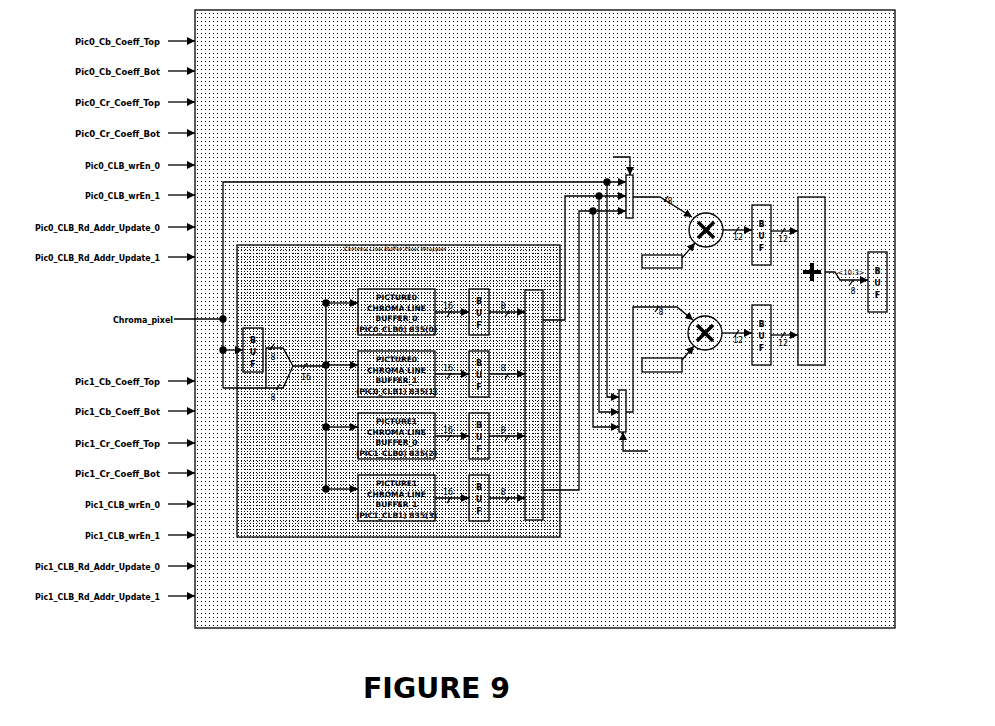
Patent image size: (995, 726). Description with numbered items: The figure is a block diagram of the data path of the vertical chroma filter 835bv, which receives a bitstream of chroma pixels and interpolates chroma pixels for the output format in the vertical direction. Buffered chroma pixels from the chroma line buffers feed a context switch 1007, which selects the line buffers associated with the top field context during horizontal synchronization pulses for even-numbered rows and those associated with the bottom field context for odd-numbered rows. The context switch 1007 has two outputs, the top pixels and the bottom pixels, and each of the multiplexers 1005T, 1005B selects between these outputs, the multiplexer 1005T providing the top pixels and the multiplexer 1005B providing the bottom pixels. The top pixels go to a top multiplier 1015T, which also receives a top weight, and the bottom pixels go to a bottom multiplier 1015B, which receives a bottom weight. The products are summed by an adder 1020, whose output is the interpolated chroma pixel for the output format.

The vertical chroma filter 835bv is at (545, 319).
The context switch 1007 is at (534, 405).
The top multiplexer 1005T is at (635, 206).
The bottom multiplexer 1005B is at (629, 419).
The top multiplier 1015T is at (715, 248).
The bottom multiplier 1015B is at (713, 317).
The adder 1020 is at (811, 281).